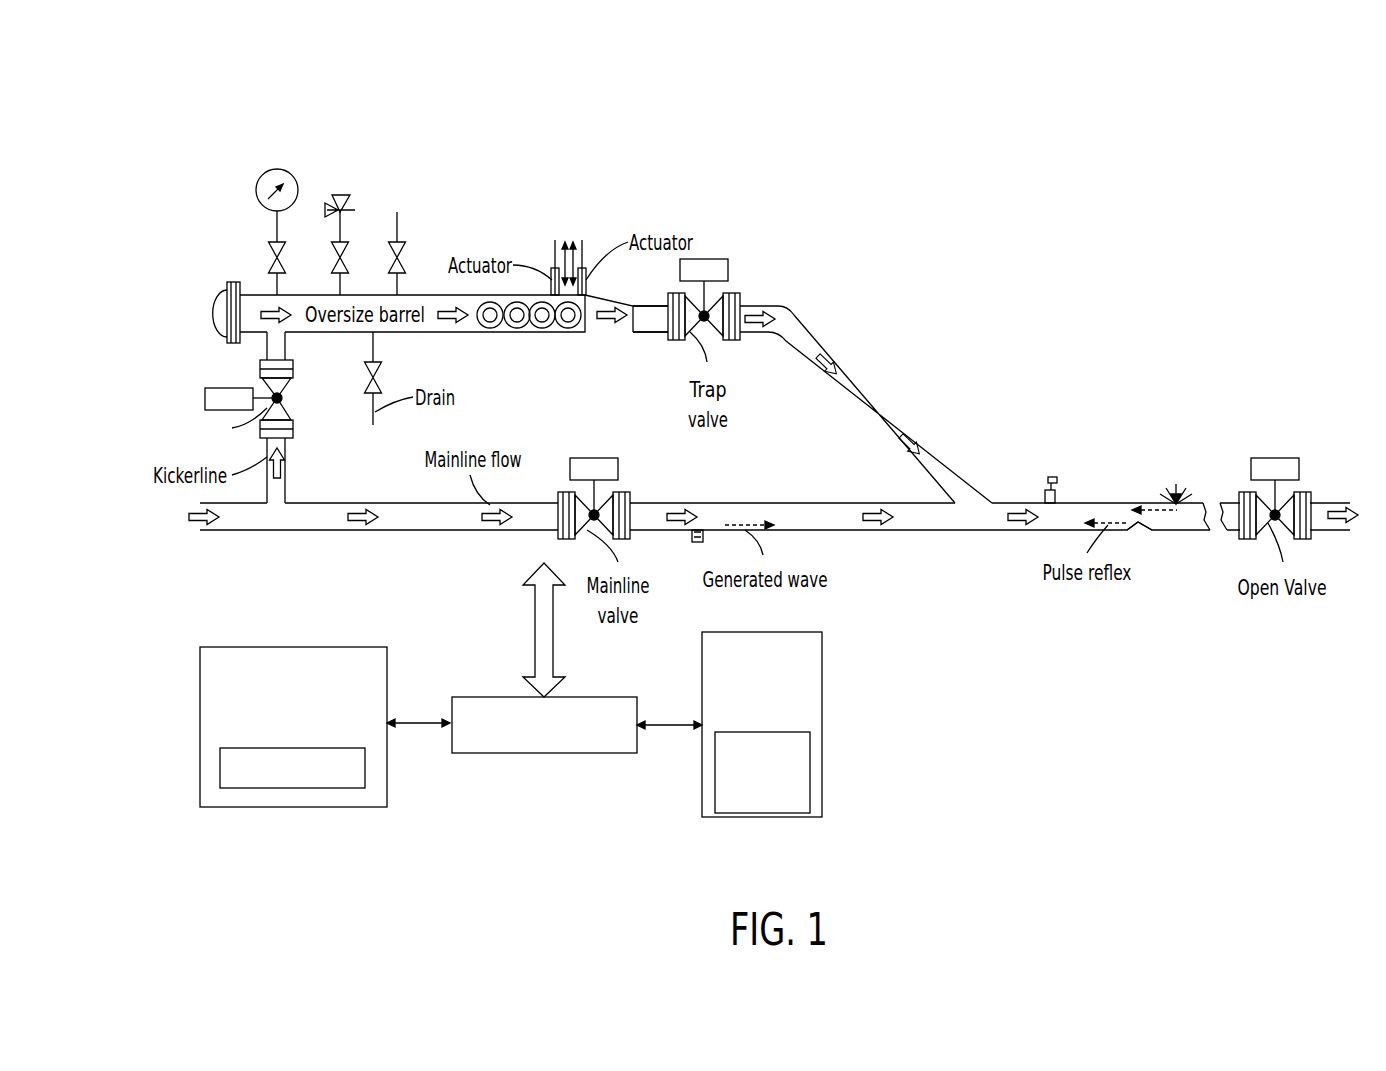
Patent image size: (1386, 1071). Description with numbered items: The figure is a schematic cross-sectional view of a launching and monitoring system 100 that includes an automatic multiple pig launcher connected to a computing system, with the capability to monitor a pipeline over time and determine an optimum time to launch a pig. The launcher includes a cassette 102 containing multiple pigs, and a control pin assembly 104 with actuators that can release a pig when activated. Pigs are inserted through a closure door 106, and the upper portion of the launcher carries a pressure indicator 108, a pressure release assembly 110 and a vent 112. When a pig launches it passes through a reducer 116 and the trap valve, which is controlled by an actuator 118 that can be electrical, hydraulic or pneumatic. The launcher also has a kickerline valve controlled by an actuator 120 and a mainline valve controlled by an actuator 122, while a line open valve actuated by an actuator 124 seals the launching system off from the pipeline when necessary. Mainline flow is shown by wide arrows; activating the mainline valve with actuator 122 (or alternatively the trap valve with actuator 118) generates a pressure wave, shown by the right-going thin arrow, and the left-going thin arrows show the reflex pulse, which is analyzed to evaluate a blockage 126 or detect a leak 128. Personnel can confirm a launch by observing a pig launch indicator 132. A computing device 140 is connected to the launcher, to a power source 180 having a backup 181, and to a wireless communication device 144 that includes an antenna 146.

The system 100 is at (1172, 230).
The cassette 102 is at (487, 338).
The control pin assembly 104 is at (552, 230).
The closure door 106 is at (225, 293).
The pressure indicator 108 is at (278, 170).
The pressure release assembly 110 is at (340, 193).
The vent 112 is at (396, 238).
The reducer 116 is at (610, 333).
The actuator 118 is at (704, 259).
The actuator 120 is at (232, 388).
The actuator 122 is at (594, 457).
The actuator 124 is at (1275, 457).
The blockage 126 is at (1139, 528).
The leak 128 is at (1173, 500).
The pig launch indicator 132 is at (1052, 477).
The computing device 140 is at (542, 753).
The wireless communication device 144 is at (200, 683).
The antenna 146 is at (220, 767).
The power source 180 is at (725, 667).
The backup 181 is at (725, 773).